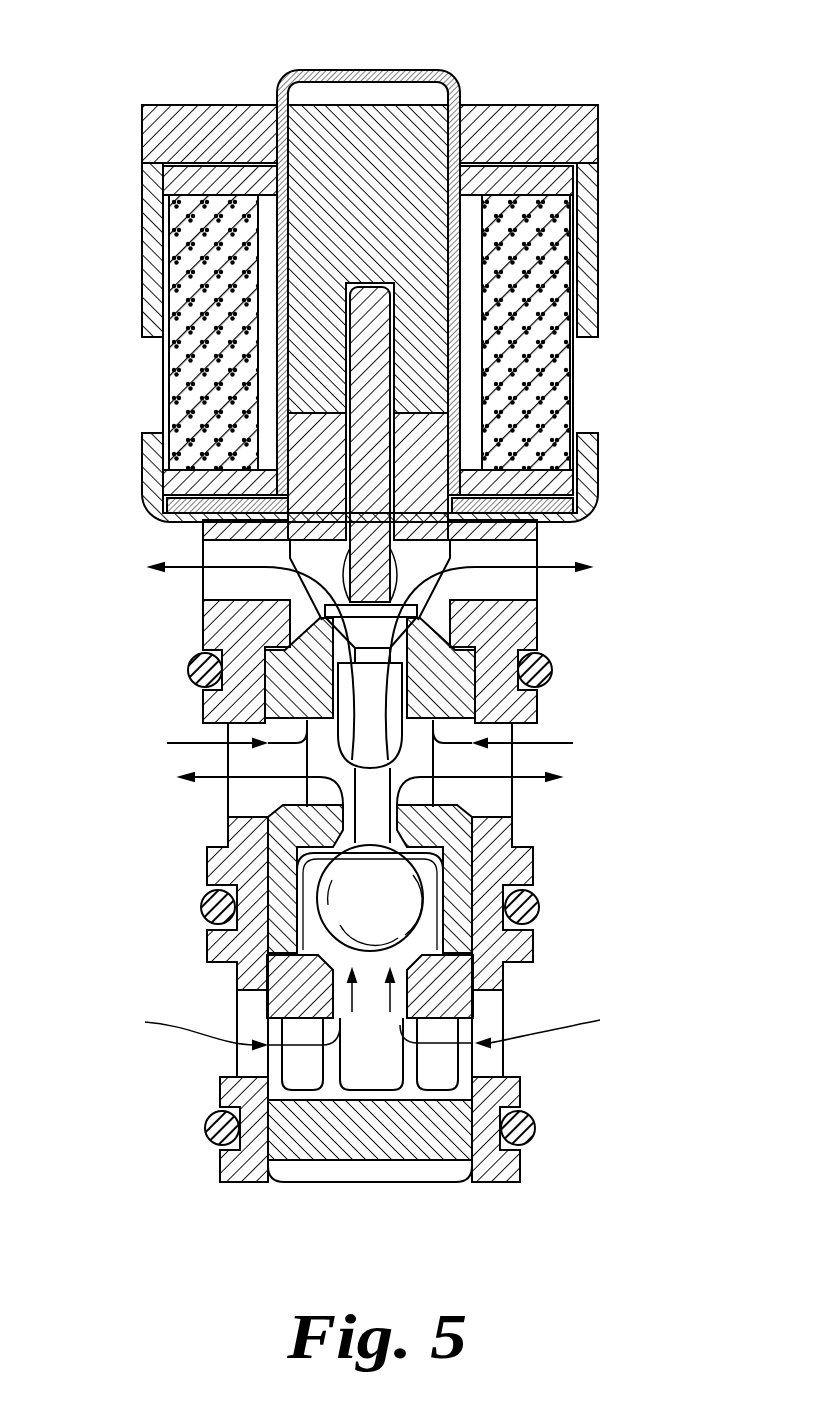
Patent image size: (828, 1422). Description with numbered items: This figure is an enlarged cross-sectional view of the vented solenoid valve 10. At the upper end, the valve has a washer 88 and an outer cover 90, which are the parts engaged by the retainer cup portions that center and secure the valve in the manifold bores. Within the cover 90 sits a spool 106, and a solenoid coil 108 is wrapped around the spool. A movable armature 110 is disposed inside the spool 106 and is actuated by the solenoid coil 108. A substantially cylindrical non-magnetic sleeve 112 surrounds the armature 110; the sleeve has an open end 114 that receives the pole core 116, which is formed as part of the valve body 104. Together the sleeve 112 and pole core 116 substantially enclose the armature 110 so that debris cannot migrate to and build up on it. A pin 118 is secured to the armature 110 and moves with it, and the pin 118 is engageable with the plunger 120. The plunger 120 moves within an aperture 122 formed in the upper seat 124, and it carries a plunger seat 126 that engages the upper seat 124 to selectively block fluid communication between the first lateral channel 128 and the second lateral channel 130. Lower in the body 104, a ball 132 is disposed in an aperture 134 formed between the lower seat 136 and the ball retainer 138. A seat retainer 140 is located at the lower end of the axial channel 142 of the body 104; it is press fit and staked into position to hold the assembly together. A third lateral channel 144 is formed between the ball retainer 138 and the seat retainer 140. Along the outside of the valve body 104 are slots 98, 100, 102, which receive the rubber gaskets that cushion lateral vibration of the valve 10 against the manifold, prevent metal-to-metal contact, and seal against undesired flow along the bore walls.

The vented solenoid valve 10 is at (381, 656).
The washer 88 is at (142, 138).
The outer cover 90 is at (142, 248).
The slot 98 is at (552, 670).
The slot 100 is at (540, 930).
The slot 102 is at (538, 1148).
The valve body 104 is at (542, 615).
The spool 106 is at (598, 185).
The solenoid coil 108 is at (555, 290).
The movable armature 110 is at (383, 123).
The non-magnetic sleeve 112 is at (312, 70).
The open end 114 is at (585, 512).
The pole core 116 is at (422, 450).
The pin 118 is at (368, 455).
The plunger 120 is at (387, 753).
The aperture 122 is at (350, 688).
The upper seat 124 is at (478, 652).
The plunger seat 126 is at (455, 550).
The first lateral channel 128 is at (505, 577).
The second lateral channel 130 is at (478, 816).
The ball 132 is at (540, 892).
The aperture 134 is at (440, 965).
The lower seat 136 is at (403, 888).
The ball retainer 138 is at (480, 1080).
The seat retainer 140 is at (363, 1128).
The axial channel 142 is at (543, 1128).
The third lateral channel 144 is at (445, 1100).